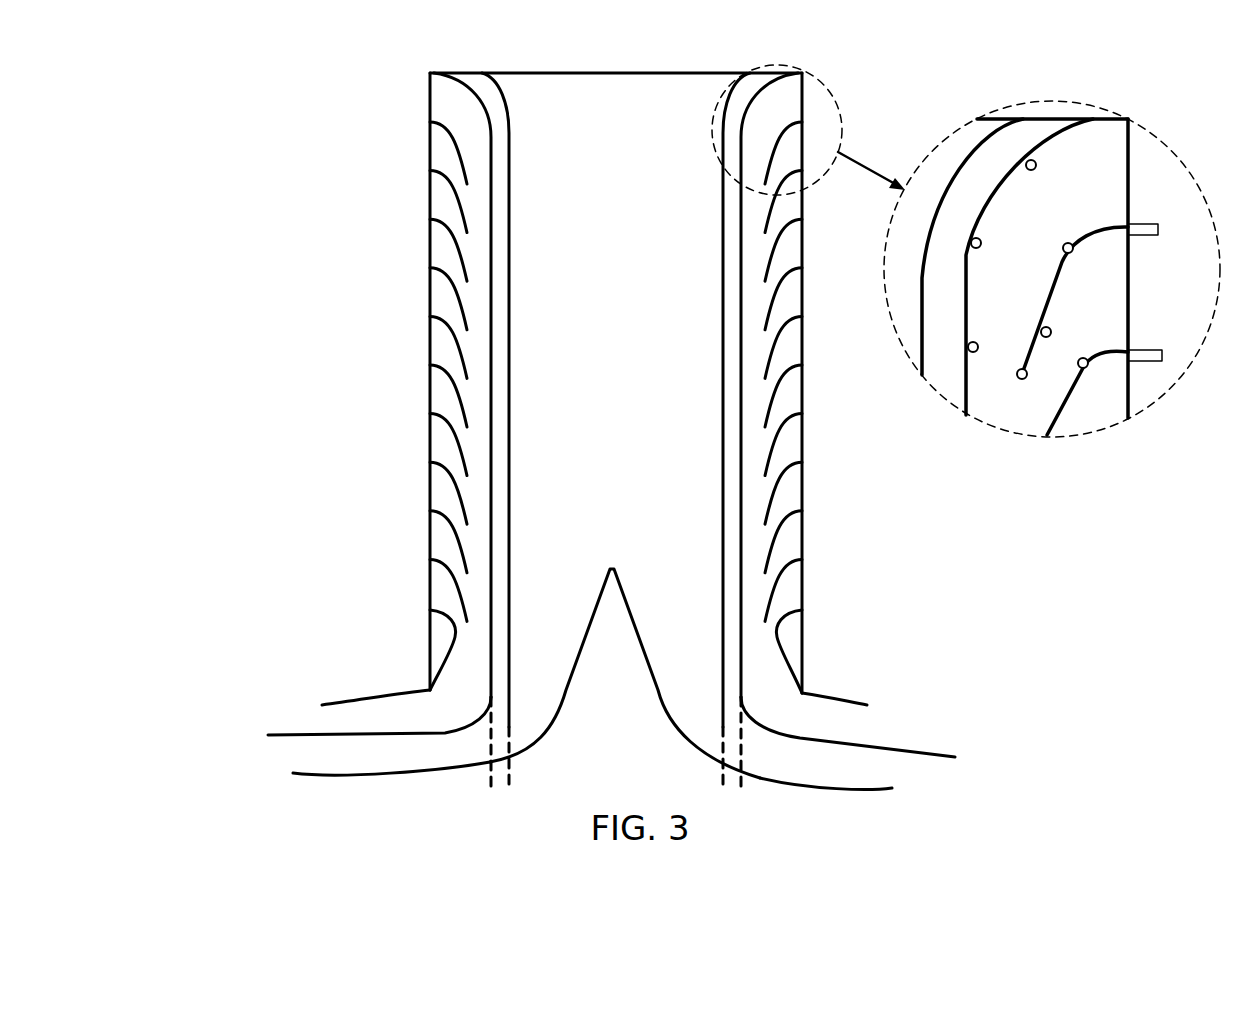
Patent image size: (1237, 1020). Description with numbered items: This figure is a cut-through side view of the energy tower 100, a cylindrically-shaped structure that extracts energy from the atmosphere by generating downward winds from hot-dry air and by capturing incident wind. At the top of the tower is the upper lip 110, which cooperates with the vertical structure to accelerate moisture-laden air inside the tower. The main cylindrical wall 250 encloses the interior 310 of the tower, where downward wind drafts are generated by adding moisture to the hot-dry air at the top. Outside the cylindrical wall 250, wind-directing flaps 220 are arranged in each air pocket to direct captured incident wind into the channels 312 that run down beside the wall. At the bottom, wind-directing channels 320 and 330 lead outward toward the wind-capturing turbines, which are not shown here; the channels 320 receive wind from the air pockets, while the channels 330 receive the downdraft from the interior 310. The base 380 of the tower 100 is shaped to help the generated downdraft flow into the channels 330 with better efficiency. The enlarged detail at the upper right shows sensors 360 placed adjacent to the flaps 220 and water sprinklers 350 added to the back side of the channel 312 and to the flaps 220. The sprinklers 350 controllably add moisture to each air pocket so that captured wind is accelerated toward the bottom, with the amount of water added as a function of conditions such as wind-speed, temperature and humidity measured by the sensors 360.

The energy tower 100 is at (316, 163).
The upper lip 110 is at (450, 73).
The flaps 220 is at (452, 288).
The cylindrical wall 250 is at (504, 392).
The interior 310 is at (587, 464).
The channels 312 is at (735, 421).
The wind-directing channel 320 is at (389, 726).
The wind-directing channel 330 is at (397, 767).
The water sprinklers 350 is at (1036, 169).
The sensors 360 is at (1143, 236).
The base 380 is at (592, 655).